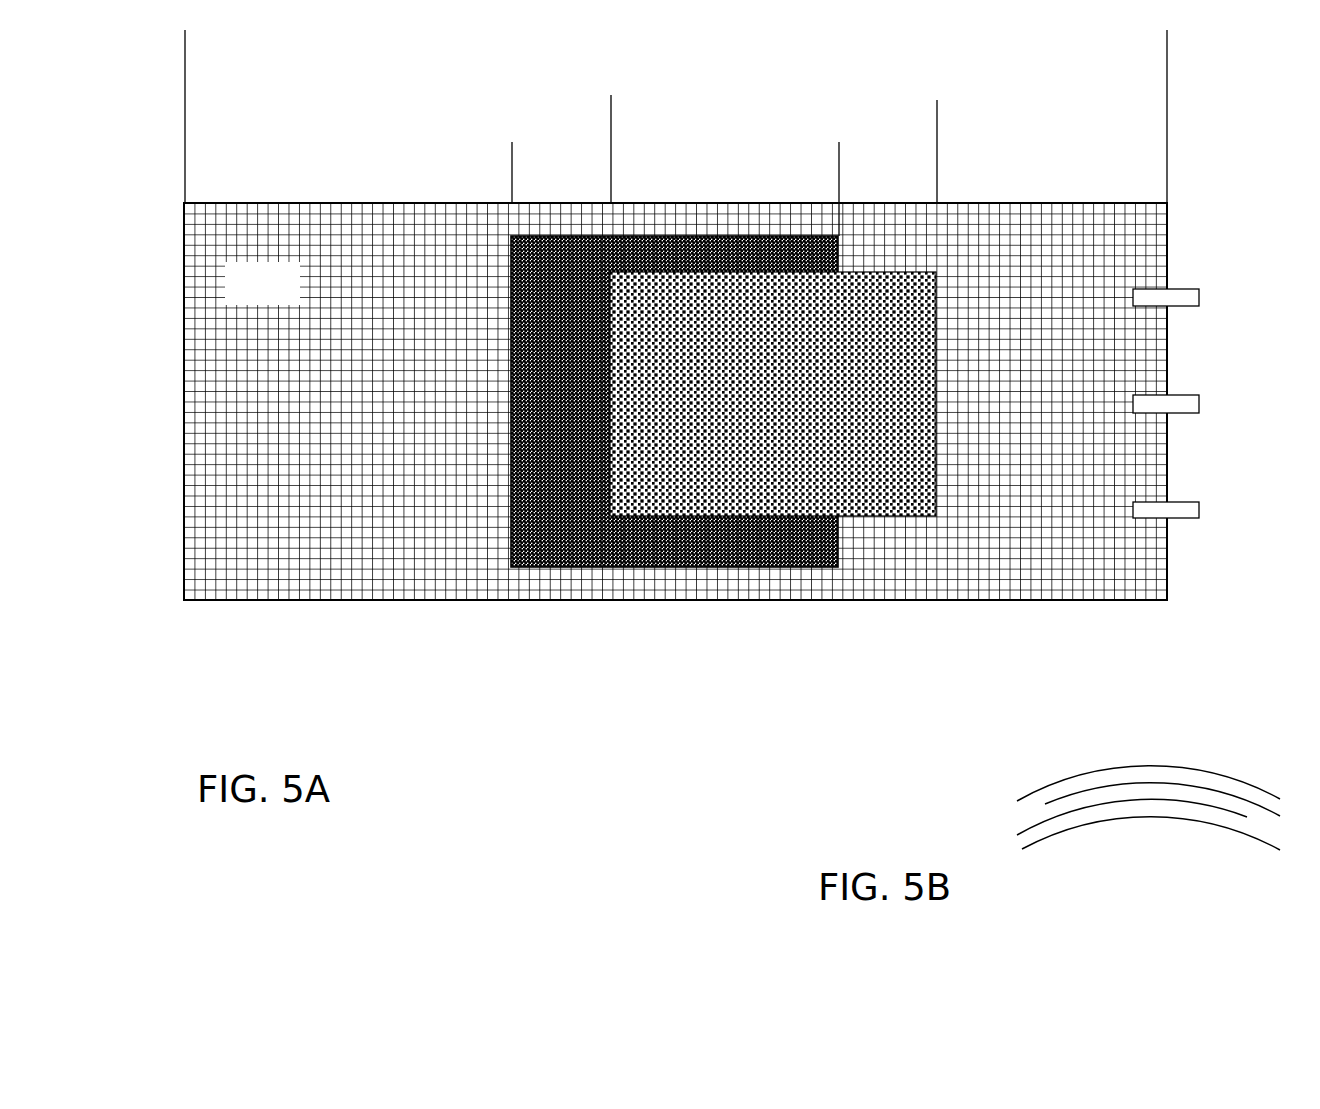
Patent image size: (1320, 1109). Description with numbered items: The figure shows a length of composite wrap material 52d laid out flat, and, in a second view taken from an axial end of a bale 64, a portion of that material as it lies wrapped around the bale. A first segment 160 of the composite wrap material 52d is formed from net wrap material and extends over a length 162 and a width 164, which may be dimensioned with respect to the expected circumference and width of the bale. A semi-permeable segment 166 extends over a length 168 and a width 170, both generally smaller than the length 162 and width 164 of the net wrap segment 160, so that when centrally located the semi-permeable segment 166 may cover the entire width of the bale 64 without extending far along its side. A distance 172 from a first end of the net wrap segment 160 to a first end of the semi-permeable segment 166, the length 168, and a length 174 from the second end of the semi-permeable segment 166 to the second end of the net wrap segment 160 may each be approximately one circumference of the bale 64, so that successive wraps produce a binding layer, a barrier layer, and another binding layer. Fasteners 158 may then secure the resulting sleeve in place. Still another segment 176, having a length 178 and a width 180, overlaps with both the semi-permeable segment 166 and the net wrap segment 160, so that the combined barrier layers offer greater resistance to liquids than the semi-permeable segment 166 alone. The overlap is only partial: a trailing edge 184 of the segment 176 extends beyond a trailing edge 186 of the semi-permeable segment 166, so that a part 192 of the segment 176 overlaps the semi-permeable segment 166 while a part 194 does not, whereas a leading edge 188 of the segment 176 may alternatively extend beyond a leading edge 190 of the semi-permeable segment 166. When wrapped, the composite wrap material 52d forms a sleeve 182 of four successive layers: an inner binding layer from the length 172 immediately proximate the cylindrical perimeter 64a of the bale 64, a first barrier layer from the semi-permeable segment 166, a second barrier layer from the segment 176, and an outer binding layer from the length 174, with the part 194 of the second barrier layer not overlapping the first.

In FIG. 5A, the composite wrap material 52d is at (734, 510).
In FIG. 5A, the fasteners 158 is at (1183, 502).
In FIG. 5A, the net wrap segment 160 is at (667, 438).
In FIG. 5B, the net wrap segment 160 is at (1127, 766).
In FIG. 5A, the length of net wrap segment 162 is at (1167, 55).
In FIG. 5A, the width of net wrap segment 164 is at (921, 185).
In FIG. 5A, the semi-permeable segment 166 is at (581, 486).
In FIG. 5B, the semi-permeable segment 166 is at (1103, 803).
In FIG. 5A, the length of semi-permeable segment 168 is at (839, 167).
In FIG. 5A, the width of semi-permeable segment 170 is at (819, 217).
In FIG. 5A, the distance from first end of net wrap segment to first end of semi-permeable segme 172 is at (512, 167).
In FIG. 5A, the length from second end of semi-permeable segment to second end of net wrap segme 174 is at (1167, 167).
In FIG. 5A, the segment 176 is at (581, 486).
In FIG. 5B, the segment 176 is at (1053, 802).
In FIG. 5A, the length of segment 178 is at (937, 123).
In FIG. 5A, the width of segment 180 is at (753, 255).
In FIG. 5B, the sleeve 182 is at (1087, 791).
In FIG. 5A, the trailing edge of segment 184 is at (791, 510).
In FIG. 5A, the trailing edge of semi-permeable segment 186 is at (696, 486).
In FIG. 5A, the leading edge of segment 188 is at (782, 510).
In FIG. 5A, the leading edge of semi-permeable segment 190 is at (581, 486).
In FIG. 5A, the overlapping part of segment 192 is at (904, 510).
In FIG. 5A, the non-overlapping part of segment 194 is at (946, 420).
In FIG. 5B, the non-overlapping part of segment 194 is at (1087, 806).
In FIG. 5B, the bale 64 is at (1087, 791).
In FIG. 5B, the cylindrical perimeter of bale 64a is at (1087, 788).